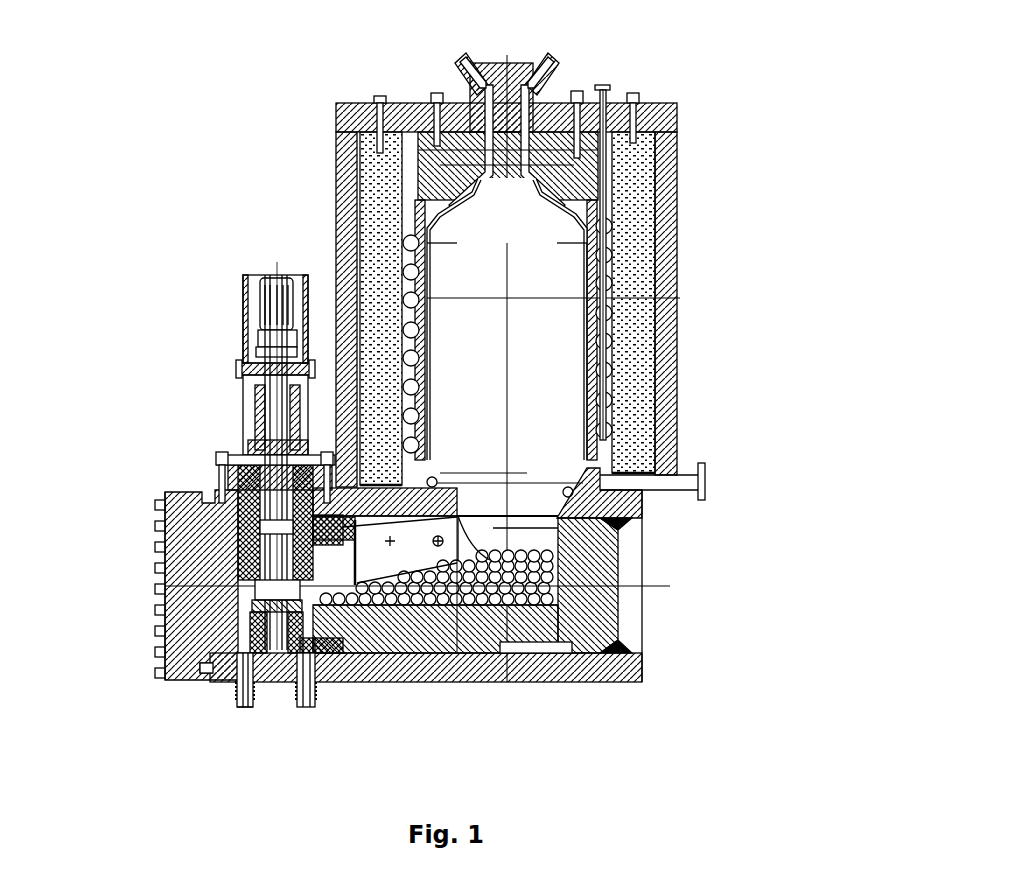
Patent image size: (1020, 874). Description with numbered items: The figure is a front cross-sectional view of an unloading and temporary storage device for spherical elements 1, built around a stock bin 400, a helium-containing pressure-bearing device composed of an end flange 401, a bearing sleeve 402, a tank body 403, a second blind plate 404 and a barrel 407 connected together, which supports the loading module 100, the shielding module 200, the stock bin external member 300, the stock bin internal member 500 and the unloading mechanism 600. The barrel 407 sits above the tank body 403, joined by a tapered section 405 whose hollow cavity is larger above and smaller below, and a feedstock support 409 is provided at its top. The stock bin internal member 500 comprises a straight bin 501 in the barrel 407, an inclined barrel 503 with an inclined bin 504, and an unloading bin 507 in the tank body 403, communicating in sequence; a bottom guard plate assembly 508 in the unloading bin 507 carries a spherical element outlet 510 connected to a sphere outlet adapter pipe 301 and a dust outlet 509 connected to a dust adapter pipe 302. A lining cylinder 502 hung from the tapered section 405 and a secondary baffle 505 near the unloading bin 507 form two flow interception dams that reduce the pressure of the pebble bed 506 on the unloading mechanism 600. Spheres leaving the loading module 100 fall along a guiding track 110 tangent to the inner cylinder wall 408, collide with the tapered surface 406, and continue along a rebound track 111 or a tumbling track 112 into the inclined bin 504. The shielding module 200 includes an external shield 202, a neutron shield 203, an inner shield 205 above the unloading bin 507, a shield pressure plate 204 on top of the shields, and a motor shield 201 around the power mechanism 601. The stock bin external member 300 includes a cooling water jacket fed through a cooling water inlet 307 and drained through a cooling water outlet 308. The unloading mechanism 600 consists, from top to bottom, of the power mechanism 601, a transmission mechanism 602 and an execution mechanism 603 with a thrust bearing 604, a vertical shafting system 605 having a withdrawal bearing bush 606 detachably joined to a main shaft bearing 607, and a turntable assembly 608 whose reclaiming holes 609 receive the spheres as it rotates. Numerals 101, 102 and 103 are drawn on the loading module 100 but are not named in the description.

The spherical element 1 is at (427, 238).
The loading module 100 is at (516, 58).
The head block 101 is at (427, 127).
The head seal 102 is at (464, 112).
The feed channel 103 is at (498, 70).
The guiding track 110 is at (612, 267).
The rebound track 111 is at (612, 430).
The tumbling track 112 is at (605, 455).
The shielding module 200 is at (528, 368).
The motor shield 201 is at (245, 275).
The external shield 202 is at (663, 289).
The neutron shield 203 is at (663, 273).
The shield pressure plate 204 is at (665, 118).
The inner shield 205 is at (290, 648).
The stock bin external member 300 is at (582, 62).
The sphere outlet adapter pipe 301 is at (240, 697).
The dust adapter pipe 302 is at (312, 668).
The cooling water inlet 307 is at (603, 87).
The cooling water outlet 308 is at (705, 490).
The stock bin 400 is at (173, 477).
The end flange 401 is at (195, 490).
The bearing sleeve 402 is at (240, 520).
The tank body 403 is at (215, 672).
The second blind plate 404 is at (612, 605).
The tapered section 405 is at (593, 463).
The tapered surface 406 is at (587, 470).
The barrel 407 is at (677, 310).
The inner cylinder wall 408 is at (677, 301).
The feedstock support 409 is at (380, 95).
The stock bin internal member 500 is at (325, 585).
The straight bin 501 is at (640, 680).
The lining cylinder 502 is at (590, 655).
The inclined barrel 503 is at (540, 645).
The inclined bin 504 is at (505, 640).
The secondary baffle 505 is at (467, 643).
The pebble bed 506 is at (407, 633).
The unloading bin 507 is at (383, 655).
The bottom guard plate assembly 508 is at (340, 660).
The dust outlet 509 is at (323, 670).
The spherical element outlet 510 is at (245, 648).
The unloading mechanism 600 is at (277, 270).
The power mechanism 601 is at (243, 322).
The transmission mechanism 602 is at (253, 397).
The execution mechanism 603 is at (253, 420).
The thrust bearing 604 is at (253, 450).
The shafting system 605 is at (222, 458).
The withdrawal bearing bush 606 is at (175, 494).
The main shaft bearing 607 is at (262, 533).
The turntable assembly 608 is at (262, 568).
The reclaiming hole 609 is at (255, 638).